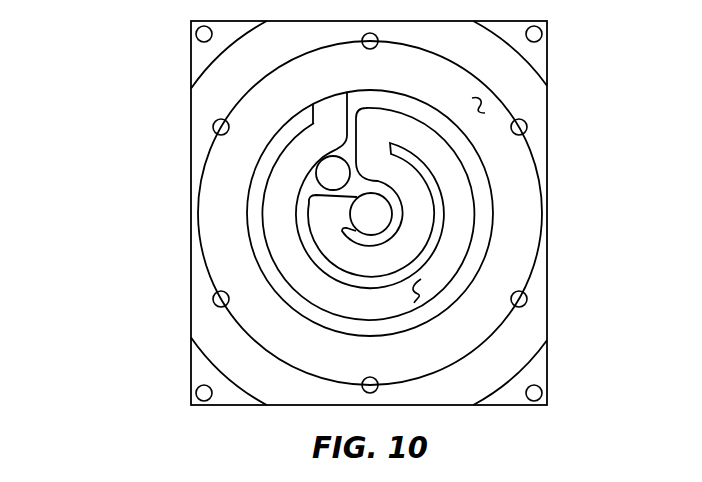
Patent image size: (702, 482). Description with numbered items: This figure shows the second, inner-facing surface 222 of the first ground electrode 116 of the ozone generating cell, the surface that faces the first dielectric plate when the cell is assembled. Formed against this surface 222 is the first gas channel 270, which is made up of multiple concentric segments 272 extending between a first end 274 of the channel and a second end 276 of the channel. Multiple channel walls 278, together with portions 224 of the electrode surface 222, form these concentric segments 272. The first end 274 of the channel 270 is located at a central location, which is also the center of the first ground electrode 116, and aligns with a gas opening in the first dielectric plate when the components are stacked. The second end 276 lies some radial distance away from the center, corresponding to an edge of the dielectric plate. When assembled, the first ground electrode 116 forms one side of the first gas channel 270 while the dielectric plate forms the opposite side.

The first ground electrode 116 is at (200, 172).
The second, inner-facing surface 222 is at (483, 105).
The portions of the electrode surface 224 is at (418, 294).
The first gas channel 270 is at (453, 153).
The concentric segments 272 is at (467, 209).
The first end of the first gas channel 274 is at (365, 215).
The second end of the first gas channel 276 is at (323, 105).
The channel walls 278 is at (425, 257).